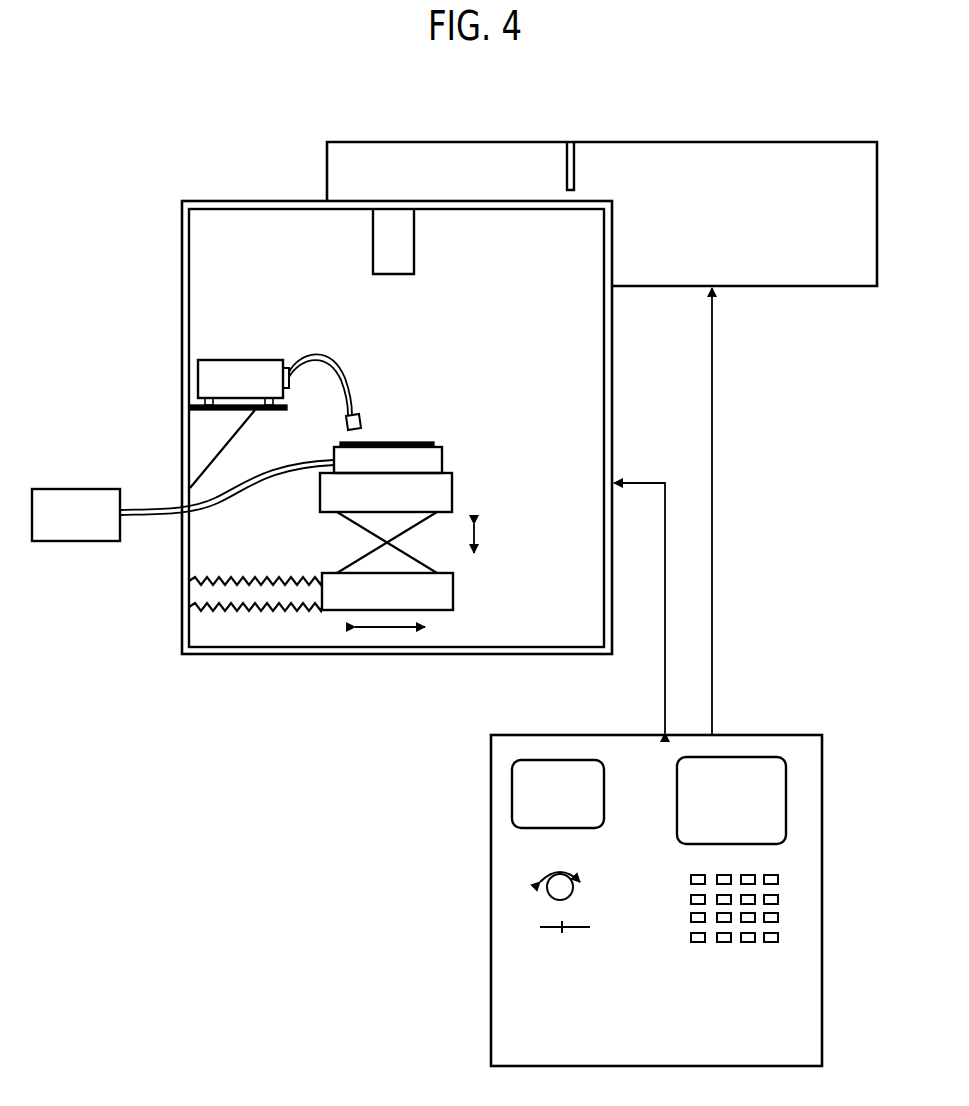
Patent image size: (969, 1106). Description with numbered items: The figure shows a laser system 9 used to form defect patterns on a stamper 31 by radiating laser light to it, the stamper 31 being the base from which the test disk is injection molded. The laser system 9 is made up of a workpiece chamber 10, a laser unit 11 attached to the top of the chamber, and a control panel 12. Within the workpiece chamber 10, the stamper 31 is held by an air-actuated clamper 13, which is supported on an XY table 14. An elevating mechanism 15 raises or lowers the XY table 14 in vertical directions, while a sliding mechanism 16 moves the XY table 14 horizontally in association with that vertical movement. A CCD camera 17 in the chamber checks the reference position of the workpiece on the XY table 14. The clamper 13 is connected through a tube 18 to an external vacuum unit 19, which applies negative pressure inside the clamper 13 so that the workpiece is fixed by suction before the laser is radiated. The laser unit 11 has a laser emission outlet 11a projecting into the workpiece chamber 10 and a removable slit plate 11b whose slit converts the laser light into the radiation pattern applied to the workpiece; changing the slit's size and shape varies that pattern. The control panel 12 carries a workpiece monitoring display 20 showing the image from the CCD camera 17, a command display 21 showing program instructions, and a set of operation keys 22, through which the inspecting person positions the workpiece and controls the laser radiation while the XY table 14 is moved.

The laser system 9 is at (300, 99).
The workpiece chamber 10 is at (183, 322).
The laser unit 11 is at (700, 142).
The laser emission outlet 11a is at (380, 252).
The slit plate 11b is at (567, 166).
The control panel 12 is at (752, 737).
The clamper 13 is at (440, 462).
The XY table 14 is at (452, 489).
The elevating mechanism 15 is at (407, 565).
The sliding mechanism 16 is at (298, 593).
The CCD camera 17 is at (365, 418).
The tube 18 is at (233, 490).
The vacuum unit 19 is at (83, 497).
The workpiece monitoring display 20 is at (780, 798).
The command display 21 is at (520, 793).
The operation keys 22 is at (775, 918).
The stamper 31 is at (395, 441).